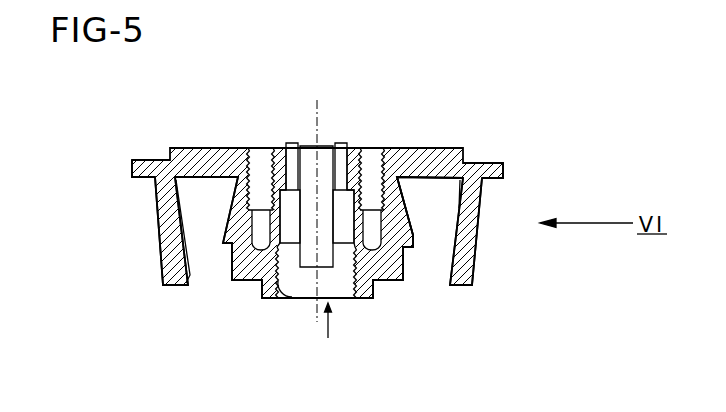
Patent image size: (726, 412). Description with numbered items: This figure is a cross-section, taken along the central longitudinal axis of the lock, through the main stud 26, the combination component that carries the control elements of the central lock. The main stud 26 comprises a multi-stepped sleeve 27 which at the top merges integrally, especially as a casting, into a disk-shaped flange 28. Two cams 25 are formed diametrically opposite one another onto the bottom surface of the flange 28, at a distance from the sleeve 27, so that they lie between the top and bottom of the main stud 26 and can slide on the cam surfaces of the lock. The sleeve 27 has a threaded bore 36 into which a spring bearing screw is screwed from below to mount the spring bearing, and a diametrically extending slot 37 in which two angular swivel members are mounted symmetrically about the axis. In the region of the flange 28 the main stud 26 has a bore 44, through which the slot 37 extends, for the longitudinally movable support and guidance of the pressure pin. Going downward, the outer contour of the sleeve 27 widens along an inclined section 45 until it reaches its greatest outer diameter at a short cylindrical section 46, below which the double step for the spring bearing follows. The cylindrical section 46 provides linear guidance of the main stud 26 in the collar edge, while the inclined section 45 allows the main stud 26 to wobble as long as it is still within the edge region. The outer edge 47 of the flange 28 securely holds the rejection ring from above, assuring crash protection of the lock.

The cams 25 is at (176, 279).
The main stud 26 is at (327, 334).
The sleeve 27 is at (241, 276).
The flange 28 is at (212, 155).
The threaded bore 36 is at (287, 282).
The slot 37 is at (323, 154).
The bore 44 is at (298, 142).
The inclined section 45 is at (405, 209).
The cylindrical section 46 is at (415, 240).
The outer edge 47 is at (138, 164).